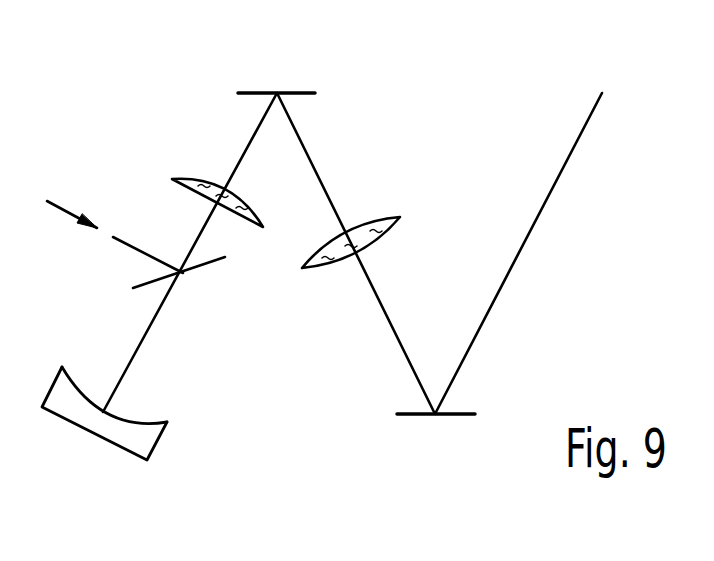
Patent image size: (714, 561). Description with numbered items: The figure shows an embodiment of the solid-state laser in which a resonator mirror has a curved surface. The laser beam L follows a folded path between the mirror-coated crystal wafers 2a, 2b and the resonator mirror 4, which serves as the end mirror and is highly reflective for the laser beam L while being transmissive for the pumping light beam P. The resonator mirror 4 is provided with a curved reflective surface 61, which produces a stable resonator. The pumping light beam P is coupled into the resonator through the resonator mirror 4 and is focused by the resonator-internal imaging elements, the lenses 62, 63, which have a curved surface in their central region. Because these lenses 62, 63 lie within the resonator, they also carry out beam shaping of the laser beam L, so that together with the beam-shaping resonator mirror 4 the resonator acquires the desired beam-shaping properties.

The crystal wafer 2a is at (258, 92).
The crystal wafer 2b is at (410, 417).
The resonator mirror 4 is at (142, 437).
The curved reflective surface 61 is at (132, 419).
The lens 62 is at (197, 180).
The lens 63 is at (380, 237).
The laser beam L is at (308, 145).
The pumping light beam P is at (53, 200).